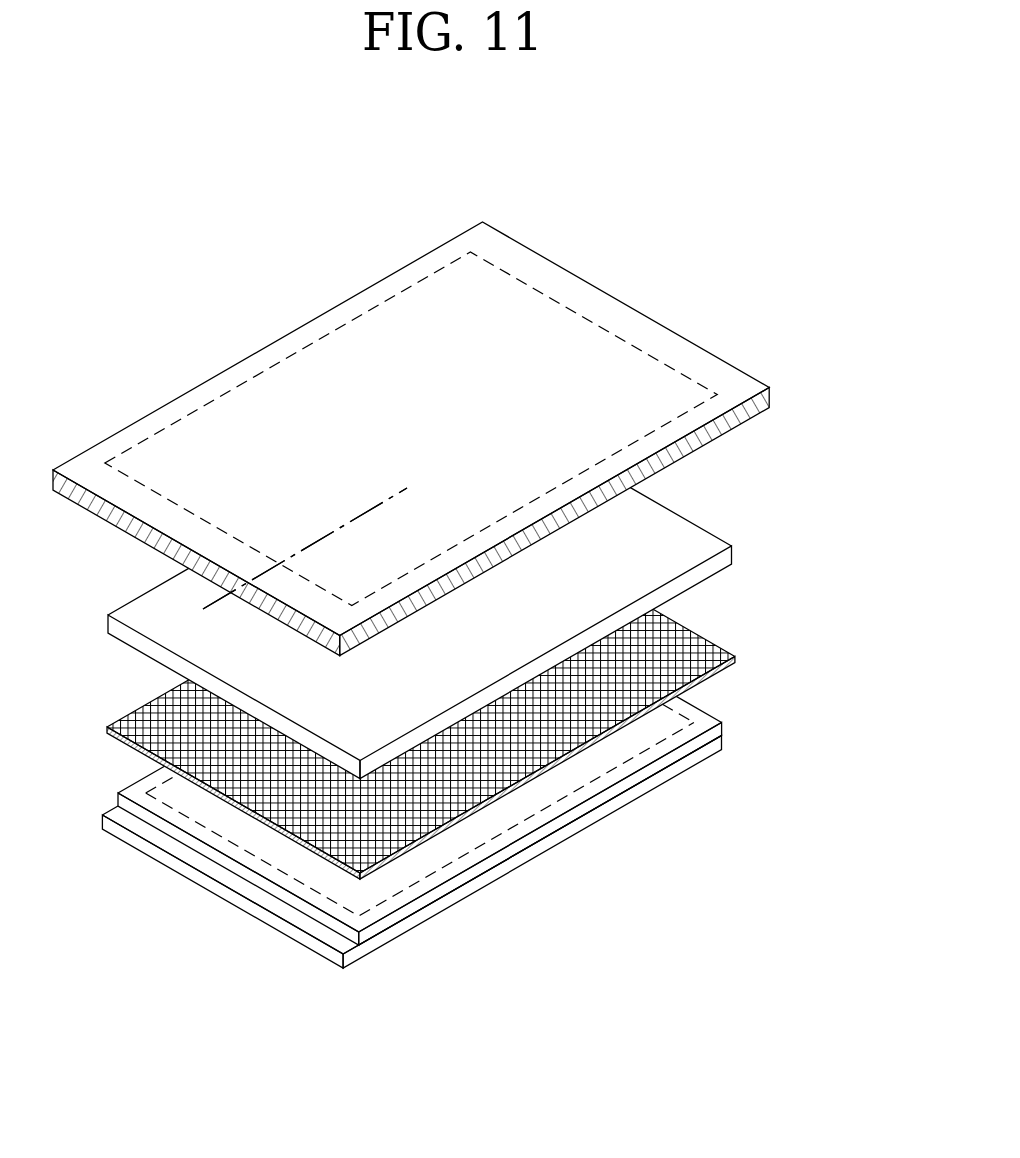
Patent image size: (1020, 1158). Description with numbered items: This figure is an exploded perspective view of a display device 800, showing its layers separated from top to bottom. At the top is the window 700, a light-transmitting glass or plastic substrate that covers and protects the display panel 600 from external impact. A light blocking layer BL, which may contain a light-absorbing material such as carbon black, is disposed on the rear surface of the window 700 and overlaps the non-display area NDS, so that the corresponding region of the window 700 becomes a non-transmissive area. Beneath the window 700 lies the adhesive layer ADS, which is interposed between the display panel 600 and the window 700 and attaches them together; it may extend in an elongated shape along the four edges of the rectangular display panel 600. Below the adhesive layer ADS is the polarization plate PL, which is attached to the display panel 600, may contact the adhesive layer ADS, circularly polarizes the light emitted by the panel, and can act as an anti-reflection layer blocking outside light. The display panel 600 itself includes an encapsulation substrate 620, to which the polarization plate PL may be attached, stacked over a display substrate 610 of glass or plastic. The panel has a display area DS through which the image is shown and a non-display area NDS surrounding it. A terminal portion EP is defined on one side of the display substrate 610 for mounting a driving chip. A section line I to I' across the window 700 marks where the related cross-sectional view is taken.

The display device 800 is at (220, 293).
The window 700 is at (472, 439).
The light blocking layer BL is at (742, 420).
The adhesive layer ADS is at (722, 557).
The polarization plate PL is at (736, 655).
The display panel 600 is at (471, 832).
The encapsulation substrate 620 is at (438, 820).
The display substrate 610 is at (464, 852).
The non-display area NDS is at (172, 816).
The display area DS is at (227, 821).
The terminal portion EP is at (246, 881).
The line I-I' I is at (303, 566).
The line I- I' is at (333, 548).